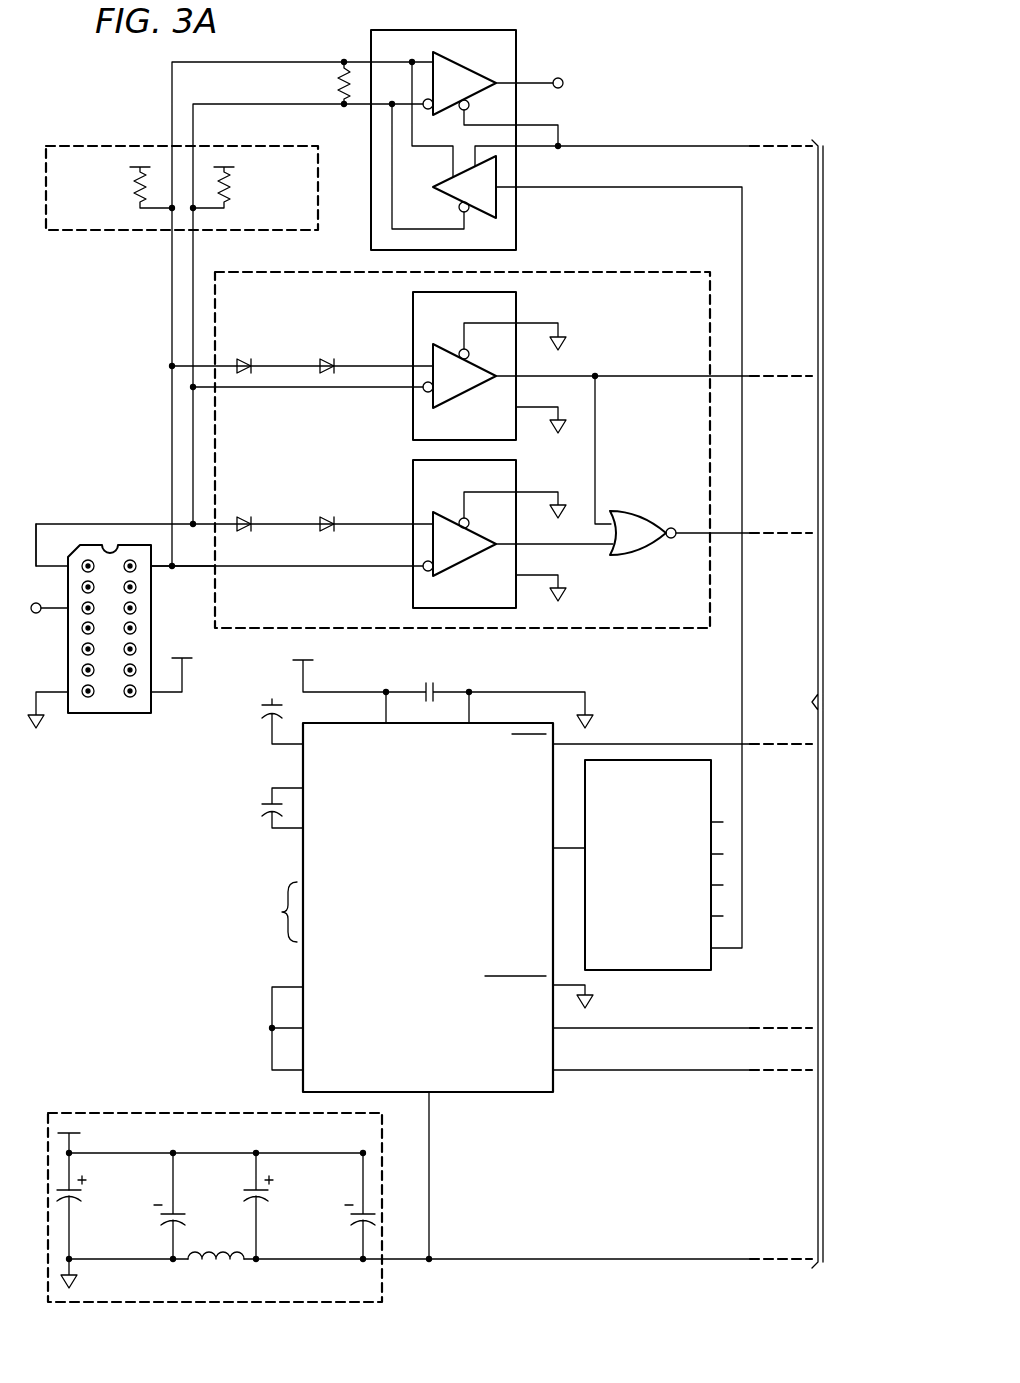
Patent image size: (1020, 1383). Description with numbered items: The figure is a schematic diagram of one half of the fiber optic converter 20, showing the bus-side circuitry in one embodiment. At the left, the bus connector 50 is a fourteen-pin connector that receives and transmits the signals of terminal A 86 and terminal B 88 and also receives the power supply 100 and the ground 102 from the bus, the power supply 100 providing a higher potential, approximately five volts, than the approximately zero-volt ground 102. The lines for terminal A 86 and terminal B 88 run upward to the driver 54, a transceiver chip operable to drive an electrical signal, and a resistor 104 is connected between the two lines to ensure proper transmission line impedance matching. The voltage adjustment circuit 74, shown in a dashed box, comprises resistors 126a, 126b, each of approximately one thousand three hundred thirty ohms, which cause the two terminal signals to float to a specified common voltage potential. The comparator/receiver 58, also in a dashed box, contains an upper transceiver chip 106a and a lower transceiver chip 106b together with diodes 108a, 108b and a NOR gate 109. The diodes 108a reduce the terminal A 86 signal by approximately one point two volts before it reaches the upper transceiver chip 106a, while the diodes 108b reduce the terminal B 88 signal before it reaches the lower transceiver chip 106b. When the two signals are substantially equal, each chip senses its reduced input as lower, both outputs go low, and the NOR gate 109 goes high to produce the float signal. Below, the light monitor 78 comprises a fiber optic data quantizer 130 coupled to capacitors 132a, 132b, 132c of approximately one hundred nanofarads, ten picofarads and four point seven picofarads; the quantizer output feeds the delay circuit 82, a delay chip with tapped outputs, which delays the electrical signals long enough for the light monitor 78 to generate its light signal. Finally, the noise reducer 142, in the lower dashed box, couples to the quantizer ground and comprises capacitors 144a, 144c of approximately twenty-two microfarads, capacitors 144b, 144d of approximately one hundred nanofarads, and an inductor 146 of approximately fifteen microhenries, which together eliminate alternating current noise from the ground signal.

The fiber optic converter 20 is at (713, 75).
The bus connector 50 is at (108, 714).
The driver 54 is at (517, 218).
The comparator/receiver 58 is at (645, 271).
The voltage adjustment circuit 74 is at (112, 231).
The light monitor 78 is at (480, 1095).
The delay circuit 82 is at (650, 972).
The terminal A 86 is at (198, 568).
The terminal B 88 is at (108, 522).
The power supply 100 is at (167, 694).
The ground 102 is at (50, 690).
The resistor 104 is at (337, 83).
The upper transceiver chip 106a is at (413, 411).
The lower transceiver chip 106b is at (413, 581).
The diodes 108a is at (330, 358).
The diodes 108b is at (330, 517).
The NOR gate 109 is at (630, 511).
The resistor 126a is at (132, 190).
The resistor 126b is at (232, 190).
The fiber optic data quantizer 130 is at (272, 976).
The capacitor 132a is at (432, 686).
The capacitor 132b is at (262, 721).
The capacitor 132c is at (262, 811).
The noise reducer 142 is at (206, 1112).
The capacitor 144a is at (84, 1199).
The capacitor 144b is at (160, 1218).
The capacitor 144c is at (272, 1199).
The capacitor 144d is at (350, 1218).
The inductor 146 is at (215, 1248).